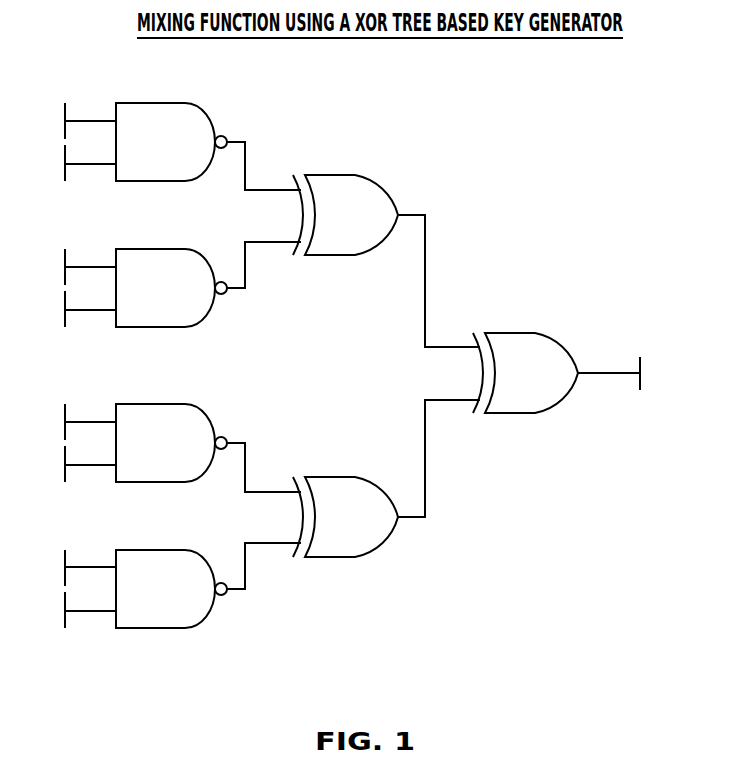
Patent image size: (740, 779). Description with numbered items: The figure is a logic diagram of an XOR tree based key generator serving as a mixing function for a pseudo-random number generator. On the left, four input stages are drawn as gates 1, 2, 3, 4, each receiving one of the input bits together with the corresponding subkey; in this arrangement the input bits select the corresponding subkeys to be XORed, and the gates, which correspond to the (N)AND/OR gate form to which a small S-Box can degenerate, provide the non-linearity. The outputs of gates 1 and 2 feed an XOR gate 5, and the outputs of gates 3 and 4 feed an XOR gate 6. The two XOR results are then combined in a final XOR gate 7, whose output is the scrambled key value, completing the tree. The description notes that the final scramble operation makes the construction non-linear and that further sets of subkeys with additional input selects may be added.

The NAND gate 1 (K1 and A1 inputs) 1 is at (164, 159).
The NAND gate 2 (K2 and A2 inputs) 2 is at (164, 302).
The NAND gate 3 (K3 and A3 inputs) 3 is at (164, 460).
The NAND gate 4 (K4 and A4 inputs) 4 is at (164, 603).
The XOR gate 5 combining outputs of gates 1 and 2 5 is at (386, 261).
The XOR gate 6 combining outputs of gates 3 and 4 6 is at (386, 495).
The XOR gate 7 producing SCRAMB1 output 7 is at (596, 390).